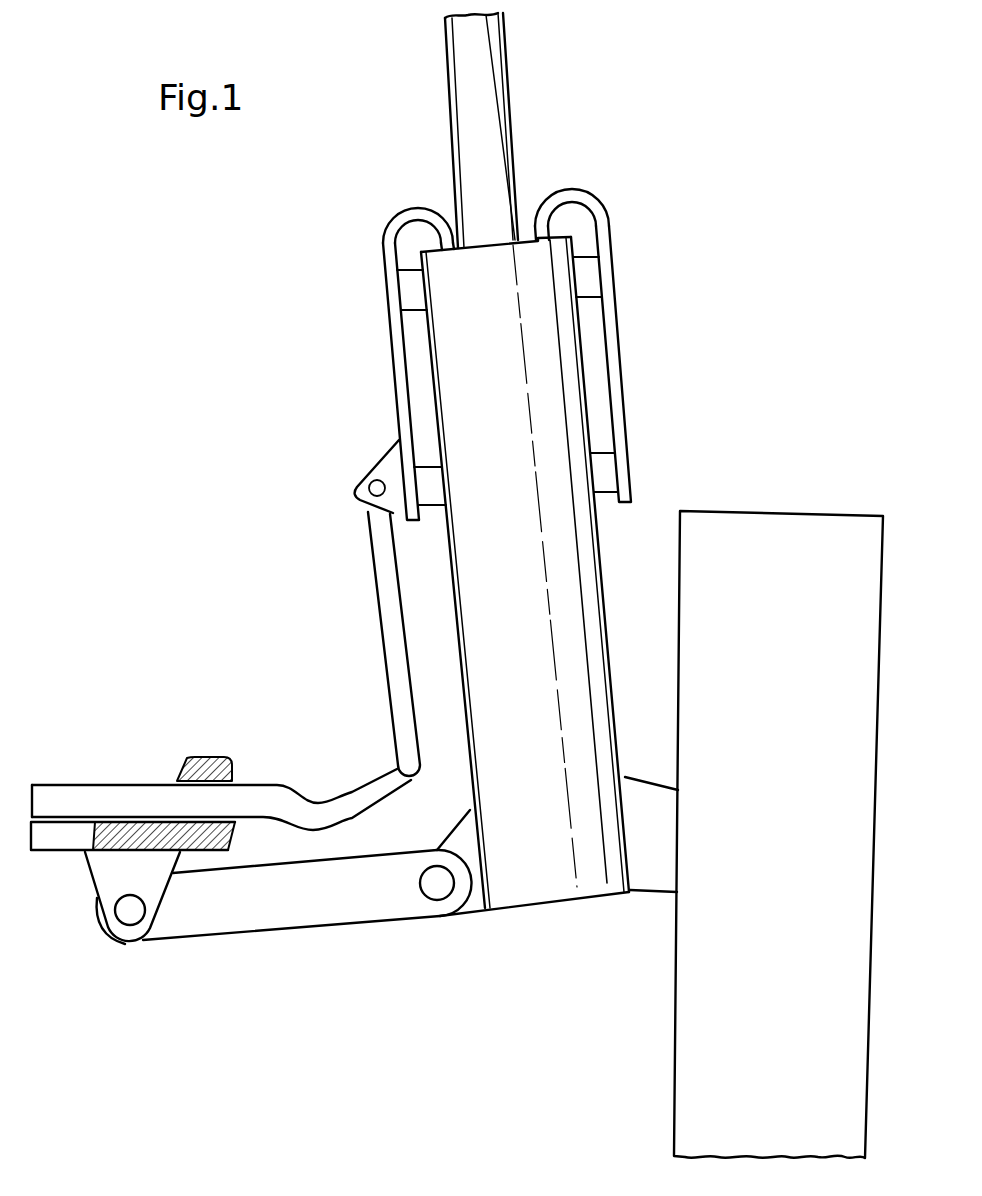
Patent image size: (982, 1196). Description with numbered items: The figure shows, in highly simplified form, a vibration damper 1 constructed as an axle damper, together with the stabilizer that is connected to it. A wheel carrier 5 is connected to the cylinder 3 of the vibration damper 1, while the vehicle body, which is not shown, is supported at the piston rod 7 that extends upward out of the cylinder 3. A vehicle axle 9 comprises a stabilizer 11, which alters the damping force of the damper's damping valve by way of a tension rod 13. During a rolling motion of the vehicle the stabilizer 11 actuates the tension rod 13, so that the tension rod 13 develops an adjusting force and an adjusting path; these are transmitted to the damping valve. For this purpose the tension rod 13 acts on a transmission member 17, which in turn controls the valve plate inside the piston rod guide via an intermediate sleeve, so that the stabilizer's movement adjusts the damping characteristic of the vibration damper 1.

The vibration damper 1 is at (587, 174).
The cylinder 3 is at (588, 548).
The wheel carrier 5 is at (655, 873).
The piston rod 7 is at (502, 98).
The vehicle axle 9 is at (256, 913).
The stabilizer 11 is at (275, 793).
The tension rod 13 is at (388, 605).
The transmission member 17 is at (397, 363).